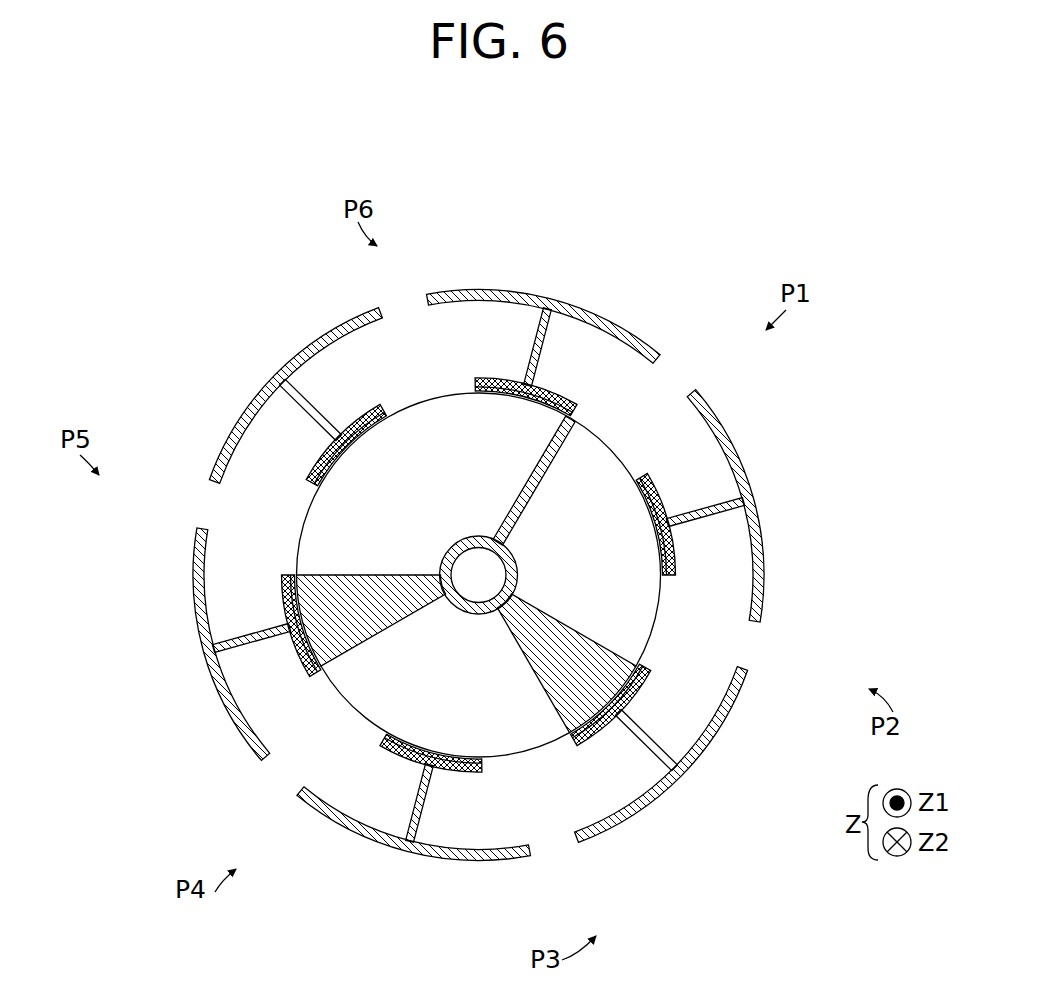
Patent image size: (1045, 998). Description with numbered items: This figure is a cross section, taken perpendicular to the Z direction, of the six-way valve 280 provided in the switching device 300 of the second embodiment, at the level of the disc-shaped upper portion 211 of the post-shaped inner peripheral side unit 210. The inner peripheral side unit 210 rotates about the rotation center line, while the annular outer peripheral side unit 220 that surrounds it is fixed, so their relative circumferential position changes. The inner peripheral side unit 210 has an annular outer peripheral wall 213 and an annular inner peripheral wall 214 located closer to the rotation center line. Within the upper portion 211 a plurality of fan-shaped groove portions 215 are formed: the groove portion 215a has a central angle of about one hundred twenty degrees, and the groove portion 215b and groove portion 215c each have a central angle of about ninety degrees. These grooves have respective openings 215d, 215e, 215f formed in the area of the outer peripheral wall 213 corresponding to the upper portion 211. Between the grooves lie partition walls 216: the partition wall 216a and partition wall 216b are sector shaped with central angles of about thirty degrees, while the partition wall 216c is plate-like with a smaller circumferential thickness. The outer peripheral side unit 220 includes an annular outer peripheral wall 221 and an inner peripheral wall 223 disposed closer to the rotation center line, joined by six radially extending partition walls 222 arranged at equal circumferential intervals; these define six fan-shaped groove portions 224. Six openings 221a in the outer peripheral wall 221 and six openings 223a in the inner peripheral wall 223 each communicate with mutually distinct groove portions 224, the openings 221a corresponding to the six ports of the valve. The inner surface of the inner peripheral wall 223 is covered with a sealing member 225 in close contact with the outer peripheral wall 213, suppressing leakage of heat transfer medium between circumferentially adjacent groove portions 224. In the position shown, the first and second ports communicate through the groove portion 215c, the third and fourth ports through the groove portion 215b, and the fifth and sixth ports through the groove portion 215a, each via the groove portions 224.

The switching device 300 is at (79, 207).
The six-way valve 280 is at (130, 240).
The inner peripheral side unit 210 is at (685, 294).
The upper portion 211 is at (603, 443).
The outer peripheral wall 213 is at (307, 652).
The inner peripheral wall 214 is at (453, 544).
The groove portions 215 is at (281, 262).
The groove portion 215a is at (442, 464).
The groove portion 215b is at (475, 715).
The groove portion 215c is at (605, 588).
The opening 215d is at (445, 397).
The opening 215e is at (378, 727).
The opening 215f is at (663, 603).
The partition walls 216 is at (85, 569).
The partition wall 216a is at (340, 588).
The partition wall 216b is at (585, 698).
The partition wall 216c is at (545, 480).
The outer peripheral side unit 220 is at (758, 467).
The outer peripheral wall 221 is at (268, 398).
The opening 221a is at (430, 296).
The partition walls 222 is at (545, 342).
The inner peripheral wall 223 is at (373, 413).
The opening 223a is at (313, 677).
The groove portions 224 is at (670, 440).
The sealing member 225 is at (512, 397).